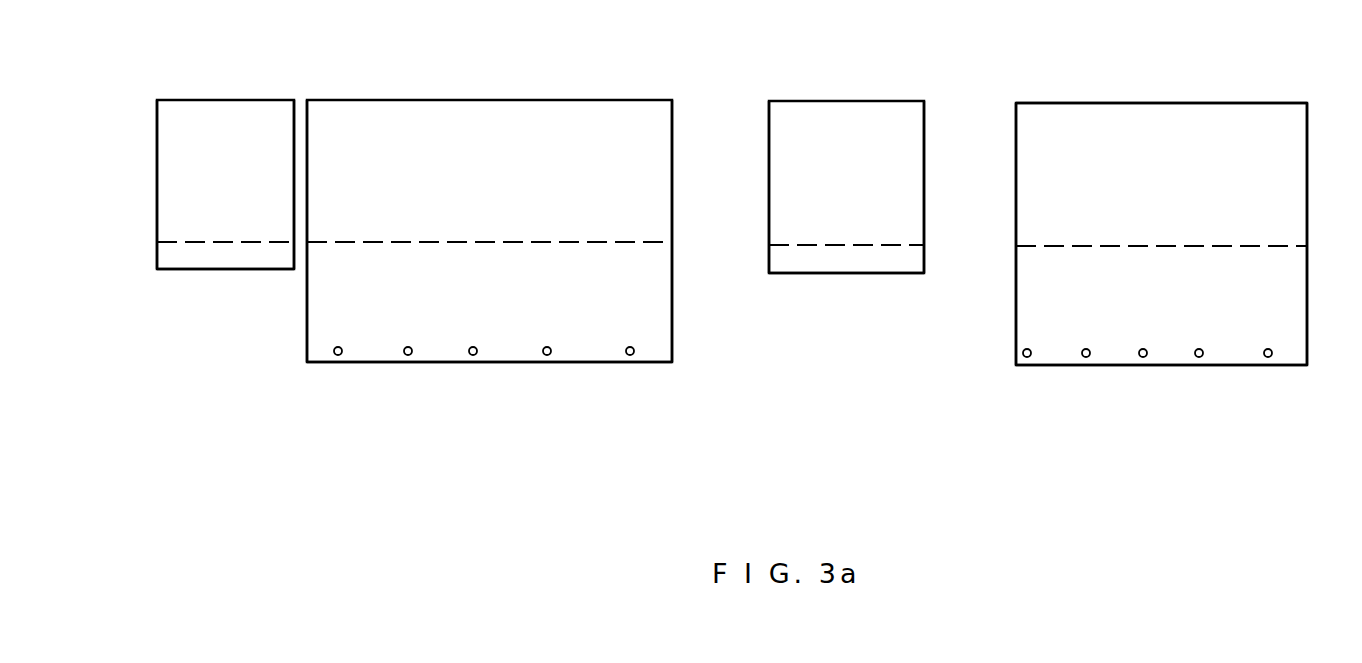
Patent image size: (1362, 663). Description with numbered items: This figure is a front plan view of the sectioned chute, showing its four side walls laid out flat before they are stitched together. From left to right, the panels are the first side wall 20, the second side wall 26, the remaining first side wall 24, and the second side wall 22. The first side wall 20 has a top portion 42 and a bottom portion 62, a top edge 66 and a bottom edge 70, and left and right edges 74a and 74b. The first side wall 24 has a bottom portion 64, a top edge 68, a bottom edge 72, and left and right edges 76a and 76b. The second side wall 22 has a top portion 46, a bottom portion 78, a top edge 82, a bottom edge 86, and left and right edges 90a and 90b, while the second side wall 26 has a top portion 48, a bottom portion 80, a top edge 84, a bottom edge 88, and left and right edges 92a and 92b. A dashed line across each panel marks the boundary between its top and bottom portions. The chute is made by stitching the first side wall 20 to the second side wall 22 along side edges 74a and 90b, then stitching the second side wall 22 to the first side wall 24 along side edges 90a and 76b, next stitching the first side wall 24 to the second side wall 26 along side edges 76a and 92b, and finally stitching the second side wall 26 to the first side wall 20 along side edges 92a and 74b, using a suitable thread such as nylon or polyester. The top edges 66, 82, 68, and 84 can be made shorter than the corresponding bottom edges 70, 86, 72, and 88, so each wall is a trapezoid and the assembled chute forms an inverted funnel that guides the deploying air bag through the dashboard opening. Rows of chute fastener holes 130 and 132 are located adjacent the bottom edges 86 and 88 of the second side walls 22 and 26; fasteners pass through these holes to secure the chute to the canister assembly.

The first side wall 20 is at (197, 272).
The second side wall 22 is at (1113, 101).
The first side wall 24 is at (843, 99).
The second side wall 26 is at (575, 98).
The top portion 42 is at (170, 132).
The top portion 46 is at (787, 112).
The top portion 48 is at (405, 112).
The bottom portion 62 is at (258, 252).
The bottom portion 64 is at (798, 254).
The top edge 66 is at (207, 98).
The top edge 68 is at (897, 99).
The bottom edge 70 is at (158, 270).
The bottom edge 72 is at (878, 276).
The left edge 74a is at (160, 206).
The right edge 74b is at (292, 128).
The left edge 76a is at (772, 207).
The right edge 76b is at (921, 153).
The bottom portion 78 is at (1226, 118).
The bottom portion 80 is at (585, 345).
The top edge 82 is at (1040, 101).
The top edge 84 is at (459, 98).
The bottom edge 86 is at (1175, 368).
The bottom edge 88 is at (651, 364).
The left edge 90a is at (1020, 168).
The right edge 90b is at (1303, 168).
The left edge 92a is at (312, 291).
The right edge 92b is at (668, 273).
The chute fastener holes 130 is at (1141, 358).
The chute fastener holes 132 is at (405, 355).